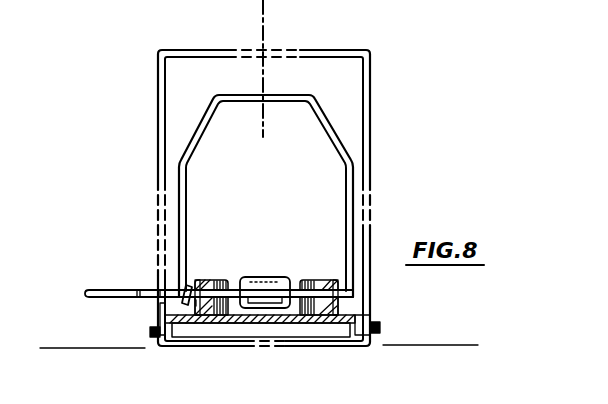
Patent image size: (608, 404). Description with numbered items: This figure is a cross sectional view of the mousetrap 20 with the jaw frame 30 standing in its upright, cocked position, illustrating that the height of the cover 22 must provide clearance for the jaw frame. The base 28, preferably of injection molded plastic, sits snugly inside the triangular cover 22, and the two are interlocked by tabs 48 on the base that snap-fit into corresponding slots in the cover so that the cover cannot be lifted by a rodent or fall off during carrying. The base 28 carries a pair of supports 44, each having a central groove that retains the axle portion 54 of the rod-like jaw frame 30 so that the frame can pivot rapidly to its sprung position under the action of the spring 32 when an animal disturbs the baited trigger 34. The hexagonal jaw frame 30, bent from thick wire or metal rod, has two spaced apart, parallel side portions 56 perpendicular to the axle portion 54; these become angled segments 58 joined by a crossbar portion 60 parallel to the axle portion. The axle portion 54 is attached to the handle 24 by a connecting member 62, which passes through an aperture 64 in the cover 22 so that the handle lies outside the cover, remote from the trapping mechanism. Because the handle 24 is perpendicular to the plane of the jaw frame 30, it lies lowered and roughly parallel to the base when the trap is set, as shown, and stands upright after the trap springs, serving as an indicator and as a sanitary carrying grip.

The mousetrap 20 is at (275, 245).
The cover 22 is at (158, 62).
The handle 24 is at (85, 290).
The base 28 is at (338, 328).
The jaw frame 30 is at (203, 117).
The spring 32 is at (222, 282).
The trigger 34 is at (250, 277).
The supports 44 is at (203, 282).
The tabs 48 is at (152, 331).
The axle portion 54 is at (232, 322).
The side portions 56 is at (175, 192).
The angled segments 58 is at (185, 158).
The crossbar portion 60 is at (302, 93).
The connecting member 62 is at (157, 302).
The aperture 64 is at (160, 283).